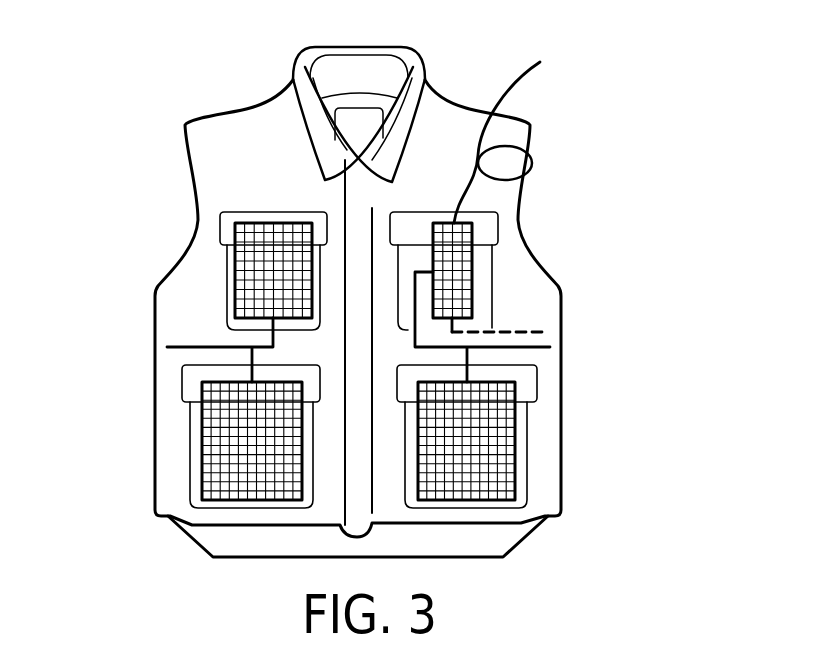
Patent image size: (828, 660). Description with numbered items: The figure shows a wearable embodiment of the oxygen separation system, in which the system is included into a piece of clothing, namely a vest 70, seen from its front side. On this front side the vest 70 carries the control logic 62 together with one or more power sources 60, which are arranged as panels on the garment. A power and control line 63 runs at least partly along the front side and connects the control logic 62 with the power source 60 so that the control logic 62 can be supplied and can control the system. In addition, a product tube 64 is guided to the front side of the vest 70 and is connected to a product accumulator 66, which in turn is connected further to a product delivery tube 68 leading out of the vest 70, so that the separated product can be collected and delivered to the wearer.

The vest 70 is at (152, 85).
The power source 60 is at (217, 447).
The control logic 62 is at (242, 278).
The power and control line 63 is at (173, 347).
The product tube 64 is at (548, 332).
The product accumulator 66 is at (478, 278).
The product delivery tube 68 is at (523, 74).